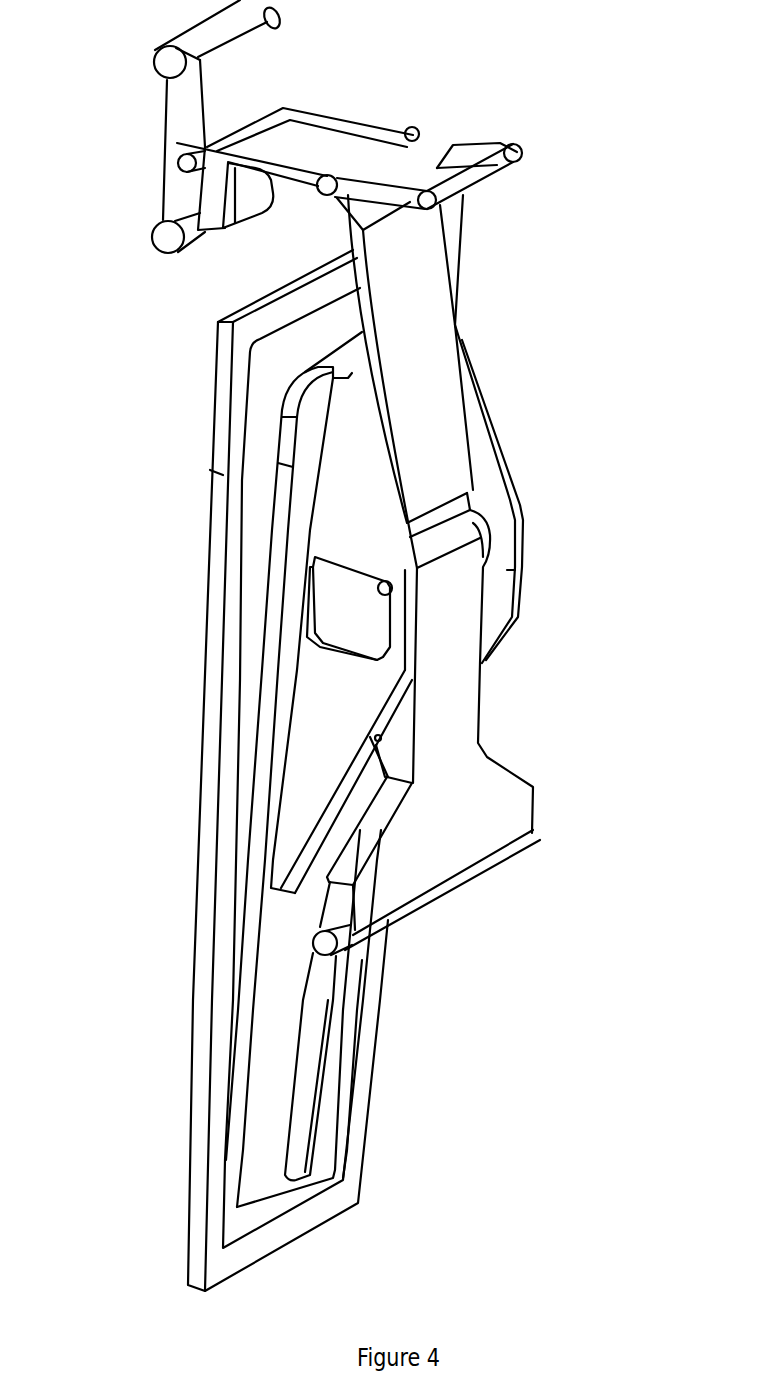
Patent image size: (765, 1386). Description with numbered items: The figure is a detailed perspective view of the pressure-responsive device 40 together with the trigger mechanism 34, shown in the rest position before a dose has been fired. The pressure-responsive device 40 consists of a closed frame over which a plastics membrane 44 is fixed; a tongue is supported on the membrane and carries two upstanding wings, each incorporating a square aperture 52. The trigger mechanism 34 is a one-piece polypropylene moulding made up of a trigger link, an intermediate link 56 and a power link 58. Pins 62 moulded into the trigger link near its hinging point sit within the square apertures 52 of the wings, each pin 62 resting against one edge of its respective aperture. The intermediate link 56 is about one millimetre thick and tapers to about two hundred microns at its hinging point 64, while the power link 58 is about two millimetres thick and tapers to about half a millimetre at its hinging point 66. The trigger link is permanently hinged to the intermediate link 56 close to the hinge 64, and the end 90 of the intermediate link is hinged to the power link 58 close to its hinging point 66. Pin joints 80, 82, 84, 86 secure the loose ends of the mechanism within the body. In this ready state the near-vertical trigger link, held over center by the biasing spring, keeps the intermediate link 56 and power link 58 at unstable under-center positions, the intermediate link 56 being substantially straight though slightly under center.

The trigger mechanism 34 is at (478, 763).
The pressure-responsive device 40 is at (215, 1218).
The plastics membrane 44 is at (253, 368).
The square aperture 52 is at (328, 625).
The intermediate link 56 is at (477, 147).
The power link 58 is at (168, 121).
The pin 62 is at (392, 588).
The hinging point 64 is at (418, 158).
The hinging point 66 is at (225, 140).
The pin joint 80 is at (543, 822).
The pin joint 82 is at (523, 152).
The pin joint 84 is at (158, 241).
The pin joint 86 is at (257, 12).
The end of the intermediate link 90 is at (300, 112).